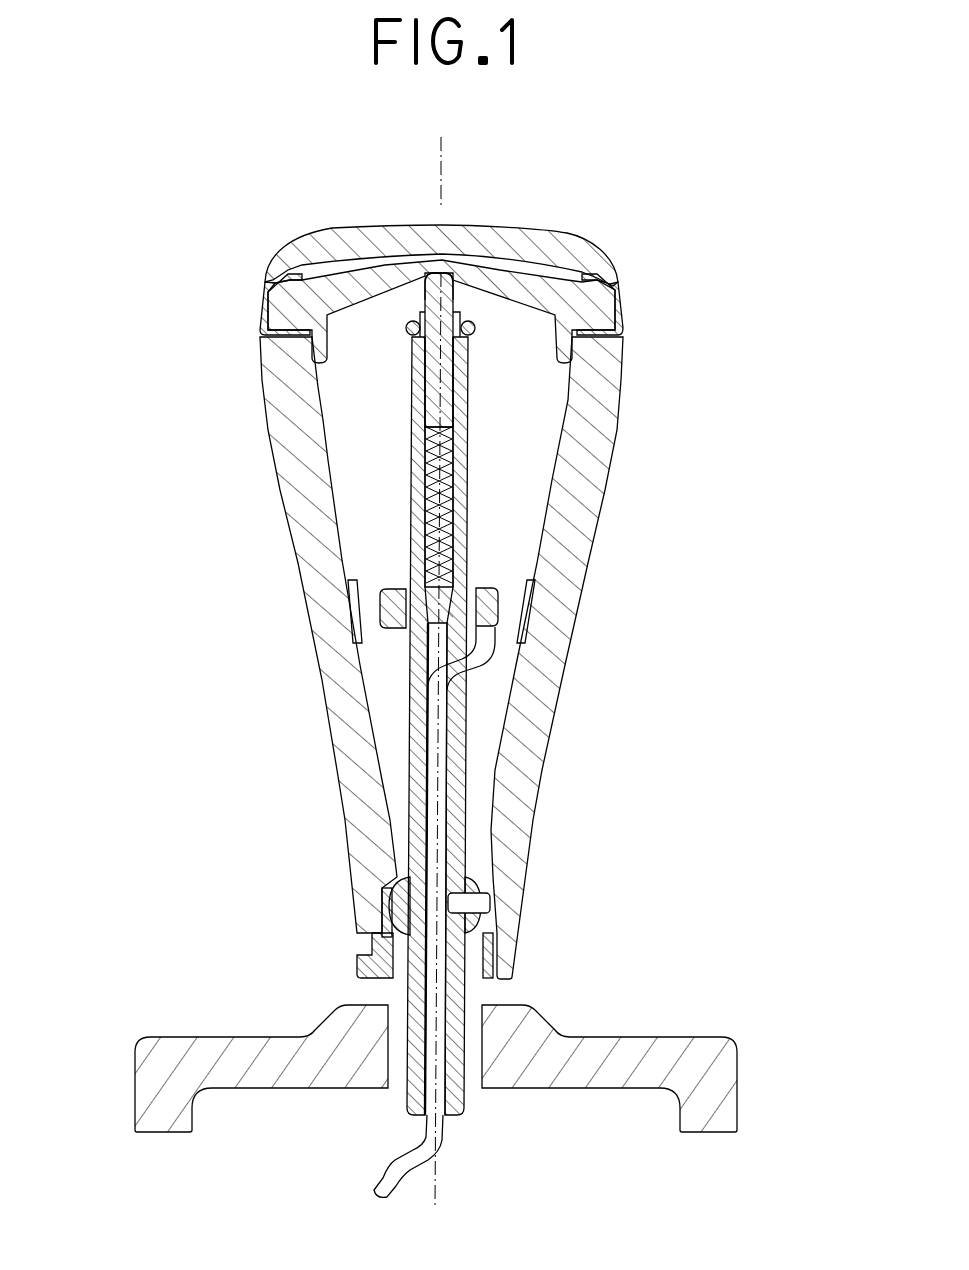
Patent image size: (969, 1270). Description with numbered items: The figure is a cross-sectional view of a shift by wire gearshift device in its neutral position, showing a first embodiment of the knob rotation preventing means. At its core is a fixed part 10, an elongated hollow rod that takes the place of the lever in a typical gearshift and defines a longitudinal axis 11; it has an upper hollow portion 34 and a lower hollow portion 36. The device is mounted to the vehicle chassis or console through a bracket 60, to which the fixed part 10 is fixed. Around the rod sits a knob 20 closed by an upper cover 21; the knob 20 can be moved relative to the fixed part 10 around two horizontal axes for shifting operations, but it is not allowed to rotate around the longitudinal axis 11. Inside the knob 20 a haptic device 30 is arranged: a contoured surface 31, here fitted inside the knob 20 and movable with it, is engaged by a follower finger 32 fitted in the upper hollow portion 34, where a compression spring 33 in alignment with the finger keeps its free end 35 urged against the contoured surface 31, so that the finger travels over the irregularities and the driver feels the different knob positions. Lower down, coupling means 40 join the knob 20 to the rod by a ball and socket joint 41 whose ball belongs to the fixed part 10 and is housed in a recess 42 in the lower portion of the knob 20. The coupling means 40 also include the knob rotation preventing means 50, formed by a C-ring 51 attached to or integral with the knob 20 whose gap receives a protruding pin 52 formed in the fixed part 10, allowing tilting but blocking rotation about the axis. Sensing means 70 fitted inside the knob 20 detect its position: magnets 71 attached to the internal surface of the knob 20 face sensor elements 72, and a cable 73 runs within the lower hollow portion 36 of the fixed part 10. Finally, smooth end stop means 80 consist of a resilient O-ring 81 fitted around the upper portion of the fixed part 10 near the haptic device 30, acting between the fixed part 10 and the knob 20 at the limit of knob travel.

The fixed part 10 is at (470, 722).
The longitudinal axis 11 is at (443, 207).
The knob 20 is at (620, 445).
The upper cover 21 is at (302, 260).
The haptic device 30 is at (420, 300).
The contoured surface 31 is at (607, 310).
The follower finger 32 is at (447, 390).
The compression spring 33 is at (449, 503).
The upper hollow portion 34 is at (455, 548).
The free end 35 is at (450, 298).
The lower hollow portion 36 is at (433, 647).
The coupling means 40 is at (404, 940).
The ball and socket joint 41 is at (403, 877).
The recess 42 is at (487, 923).
The knob rotation preventing means 50 is at (481, 890).
The C-ring 51 is at (383, 907).
The protruding pin 52 is at (491, 905).
The bracket 60 is at (717, 1050).
The sensing means 70 is at (507, 605).
The magnets 71 is at (353, 609).
The sensor elements 72 is at (386, 588).
The cable 73 is at (443, 812).
The smooth end stop means 80 is at (393, 327).
The O-ring 81 is at (406, 322).